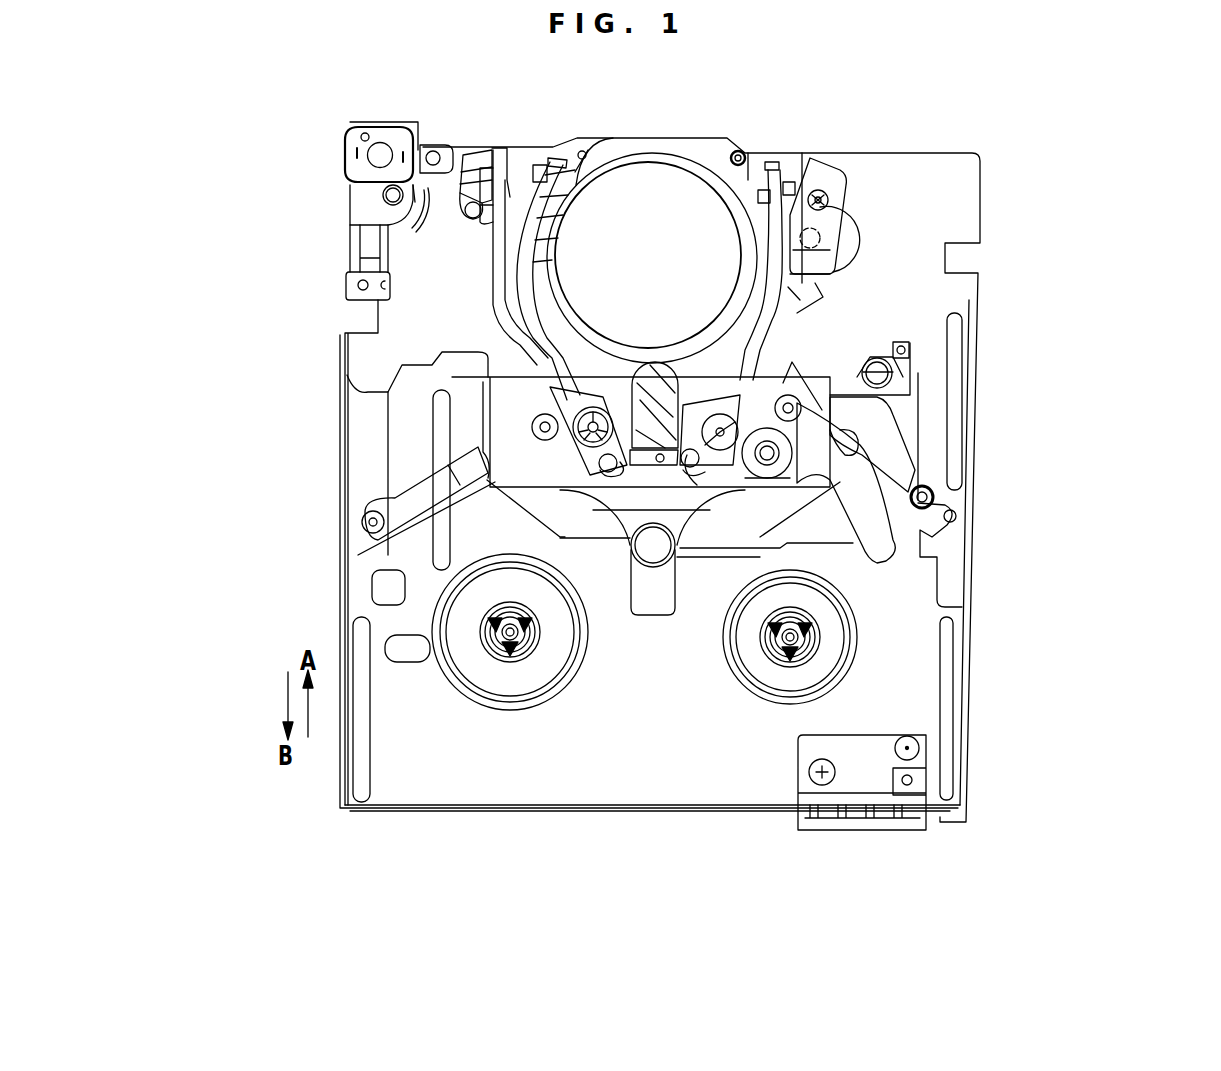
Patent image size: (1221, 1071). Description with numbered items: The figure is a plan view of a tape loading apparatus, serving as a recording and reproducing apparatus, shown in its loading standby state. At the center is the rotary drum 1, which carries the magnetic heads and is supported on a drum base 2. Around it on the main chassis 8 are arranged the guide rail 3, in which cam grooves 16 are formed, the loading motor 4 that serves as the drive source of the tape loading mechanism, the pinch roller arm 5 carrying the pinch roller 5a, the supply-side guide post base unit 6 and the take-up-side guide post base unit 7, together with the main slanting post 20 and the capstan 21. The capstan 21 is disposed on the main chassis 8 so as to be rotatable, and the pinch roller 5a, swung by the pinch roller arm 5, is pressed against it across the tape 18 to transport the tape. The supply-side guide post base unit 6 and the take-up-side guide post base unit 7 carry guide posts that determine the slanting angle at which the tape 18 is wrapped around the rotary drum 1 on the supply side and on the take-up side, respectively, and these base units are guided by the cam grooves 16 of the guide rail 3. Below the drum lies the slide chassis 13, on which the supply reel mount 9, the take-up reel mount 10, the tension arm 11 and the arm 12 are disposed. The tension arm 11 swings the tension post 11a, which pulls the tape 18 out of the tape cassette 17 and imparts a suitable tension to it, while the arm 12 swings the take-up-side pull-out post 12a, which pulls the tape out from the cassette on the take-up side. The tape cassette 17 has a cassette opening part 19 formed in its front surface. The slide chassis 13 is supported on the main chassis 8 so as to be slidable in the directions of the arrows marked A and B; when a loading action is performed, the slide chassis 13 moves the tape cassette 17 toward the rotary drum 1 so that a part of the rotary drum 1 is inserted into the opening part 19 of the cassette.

The rotary drum 1 is at (657, 187).
The drum base 2 is at (545, 150).
The guide rail 3 is at (557, 312).
The loading motor 4 is at (348, 160).
The pinch roller arm 5 is at (853, 487).
The pinch roller 5a is at (787, 487).
The supply-side guide post base unit 6 is at (575, 395).
The take-up-side guide post base unit 7 is at (745, 370).
The main chassis 8 is at (967, 197).
The supply reel mount 9 is at (490, 670).
The take-up reel mount 10 is at (787, 680).
The tension arm 11 is at (385, 488).
The tension post 11a is at (532, 427).
The arm 12 is at (887, 430).
The take-up-side pull-out post 12a is at (802, 405).
The slide chassis 13 is at (348, 757).
The cam grooves 16 is at (510, 160).
The tape cassette 17 is at (615, 768).
The tape 18 is at (750, 355).
The cassette opening part 19 is at (560, 470).
The main slanting post 20 is at (462, 165).
The capstan 21 is at (838, 232).